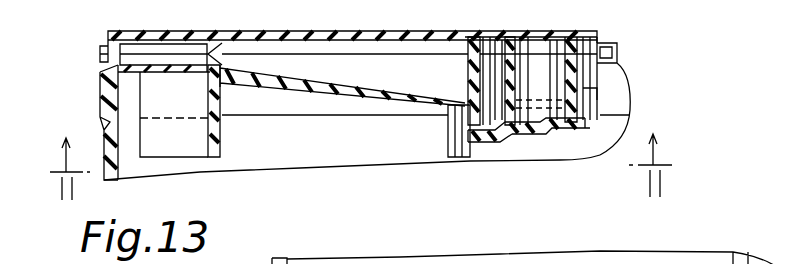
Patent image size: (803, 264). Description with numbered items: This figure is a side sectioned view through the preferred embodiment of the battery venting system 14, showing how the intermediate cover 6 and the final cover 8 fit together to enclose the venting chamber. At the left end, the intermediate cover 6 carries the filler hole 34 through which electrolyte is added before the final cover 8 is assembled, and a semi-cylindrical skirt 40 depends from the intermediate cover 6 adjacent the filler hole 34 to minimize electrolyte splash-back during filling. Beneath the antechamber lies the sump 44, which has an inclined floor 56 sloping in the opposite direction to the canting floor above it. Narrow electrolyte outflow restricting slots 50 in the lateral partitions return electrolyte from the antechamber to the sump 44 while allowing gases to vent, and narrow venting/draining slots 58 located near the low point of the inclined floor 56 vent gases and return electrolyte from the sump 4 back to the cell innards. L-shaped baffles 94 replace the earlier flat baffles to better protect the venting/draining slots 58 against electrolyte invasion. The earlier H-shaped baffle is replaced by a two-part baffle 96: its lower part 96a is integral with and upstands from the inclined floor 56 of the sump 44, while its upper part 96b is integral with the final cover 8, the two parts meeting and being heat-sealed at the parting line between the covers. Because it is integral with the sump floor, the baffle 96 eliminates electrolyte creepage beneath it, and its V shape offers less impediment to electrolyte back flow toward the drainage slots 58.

The sump 4 is at (312, 147).
The intermediate cover 6 is at (100, 72).
The final cover 8 is at (275, 38).
The venting system 14 is at (370, 153).
The filler hole 34 is at (145, 66).
The semi-cylindrical skirt 40 is at (220, 132).
The sump 44 is at (478, 60).
The electrolyte outflow restricting slots 50 is at (600, 67).
The inclined floor 56 is at (543, 130).
The venting/draining slots 58 is at (483, 143).
The L-shaped baffles 94 is at (450, 135).
The two-part baffle 96 is at (523, 70).
The lower part of the baffle 96a is at (483, 72).
The upper part of the baffle 96b is at (510, 57).